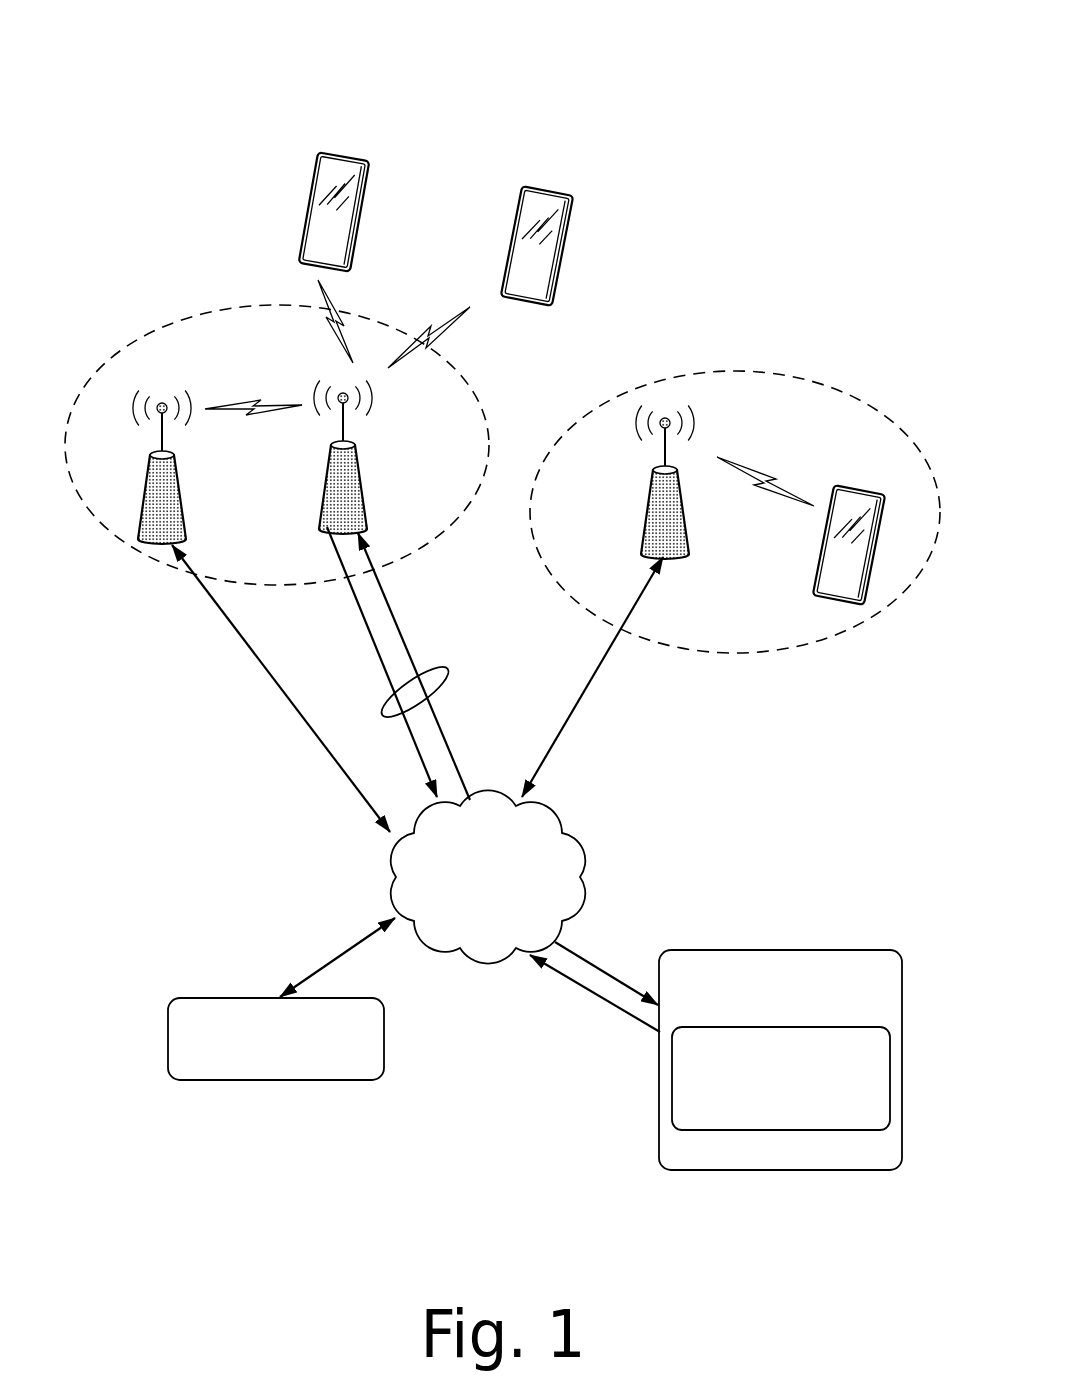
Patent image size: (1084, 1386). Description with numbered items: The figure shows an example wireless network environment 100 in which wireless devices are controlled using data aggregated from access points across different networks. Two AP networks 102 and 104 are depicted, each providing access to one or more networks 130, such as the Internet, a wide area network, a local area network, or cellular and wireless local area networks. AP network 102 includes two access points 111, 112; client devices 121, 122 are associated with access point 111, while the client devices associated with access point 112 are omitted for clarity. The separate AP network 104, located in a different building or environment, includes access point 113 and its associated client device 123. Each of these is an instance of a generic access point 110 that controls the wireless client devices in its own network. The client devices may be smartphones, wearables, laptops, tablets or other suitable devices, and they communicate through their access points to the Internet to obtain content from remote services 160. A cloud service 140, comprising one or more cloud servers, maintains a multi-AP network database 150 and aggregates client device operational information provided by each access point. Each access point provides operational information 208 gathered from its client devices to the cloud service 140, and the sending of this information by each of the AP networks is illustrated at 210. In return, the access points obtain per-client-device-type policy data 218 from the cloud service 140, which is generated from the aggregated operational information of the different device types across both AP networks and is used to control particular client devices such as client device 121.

The wireless network environment 100 is at (205, 35).
The AP network 102 is at (462, 377).
The AP network 104 is at (843, 393).
The access point 110 is at (273, 380).
The access point 111 is at (362, 465).
The access point 112 is at (180, 478).
The access point 113 is at (648, 490).
The client device 121 is at (373, 157).
The client device 122 is at (575, 188).
The client device 123 is at (813, 580).
The networks 130 is at (471, 897).
The cloud service 140 is at (762, 1009).
The multi-AP network database 150 is at (762, 1116).
The remote services 160 is at (257, 1062).
The operational information 208 is at (370, 633).
The sending of operational information 210 is at (450, 672).
The per-client-device-type policy data 218 is at (407, 640).